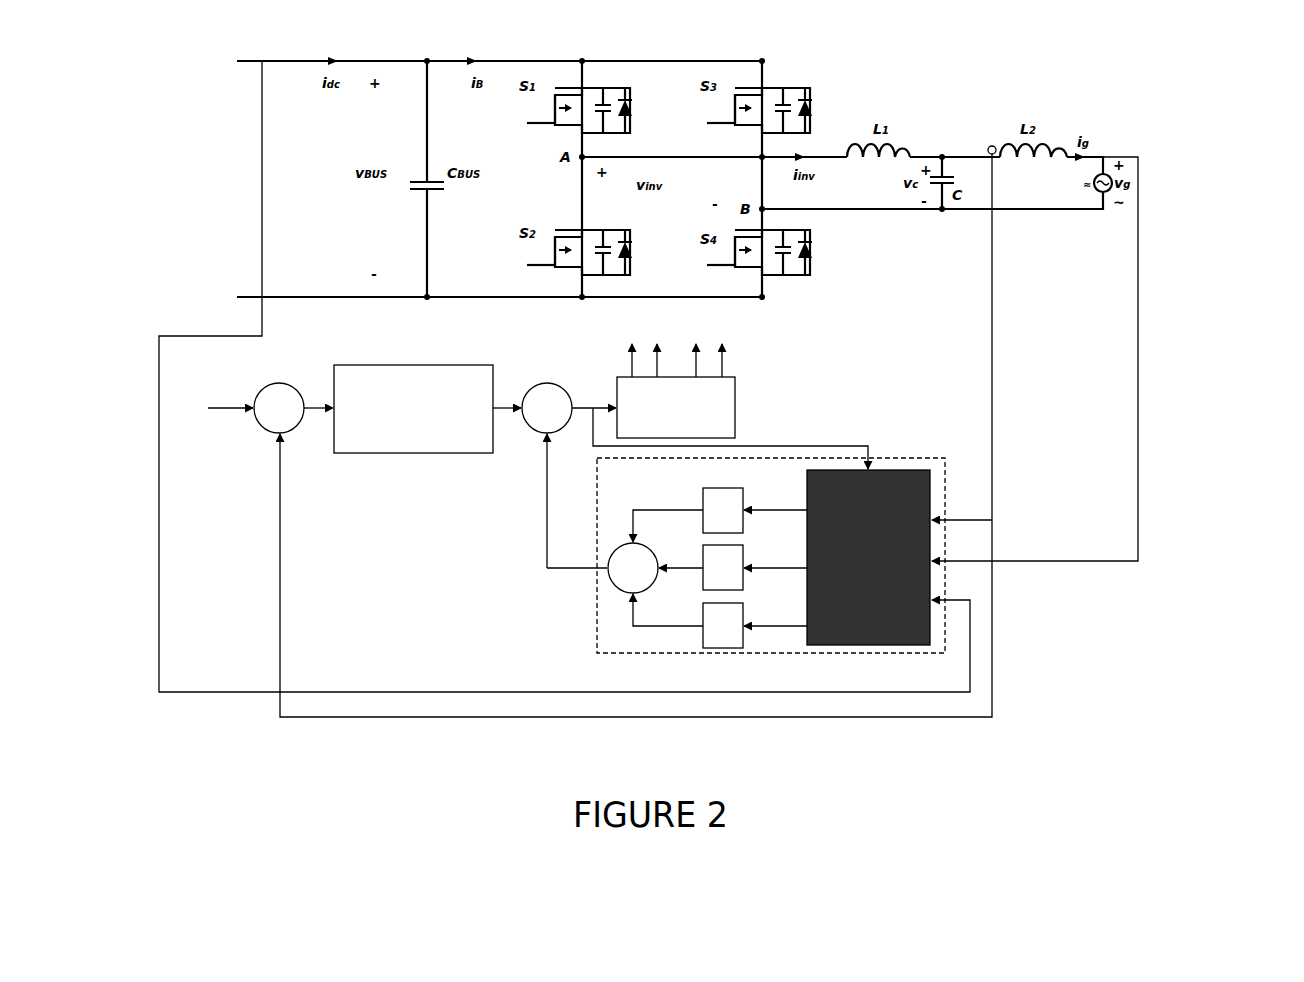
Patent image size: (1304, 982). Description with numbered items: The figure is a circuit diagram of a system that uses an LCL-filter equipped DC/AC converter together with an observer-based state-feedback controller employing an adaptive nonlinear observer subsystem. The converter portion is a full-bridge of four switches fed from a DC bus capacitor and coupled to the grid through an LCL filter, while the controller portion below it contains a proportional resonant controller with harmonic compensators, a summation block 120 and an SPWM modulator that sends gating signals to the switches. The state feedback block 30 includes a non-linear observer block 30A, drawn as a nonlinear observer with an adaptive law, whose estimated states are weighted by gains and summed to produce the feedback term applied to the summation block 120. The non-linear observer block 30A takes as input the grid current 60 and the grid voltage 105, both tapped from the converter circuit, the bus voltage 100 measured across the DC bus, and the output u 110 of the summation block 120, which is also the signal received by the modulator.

The bus voltage 100 is at (157, 556).
The output u 110 is at (803, 444).
The summation block 120 is at (527, 428).
The linear state feedback block 30 is at (596, 613).
The non-linear observer block 30A is at (927, 482).
The grid current 60 is at (997, 313).
The grid voltage 105 is at (1138, 440).